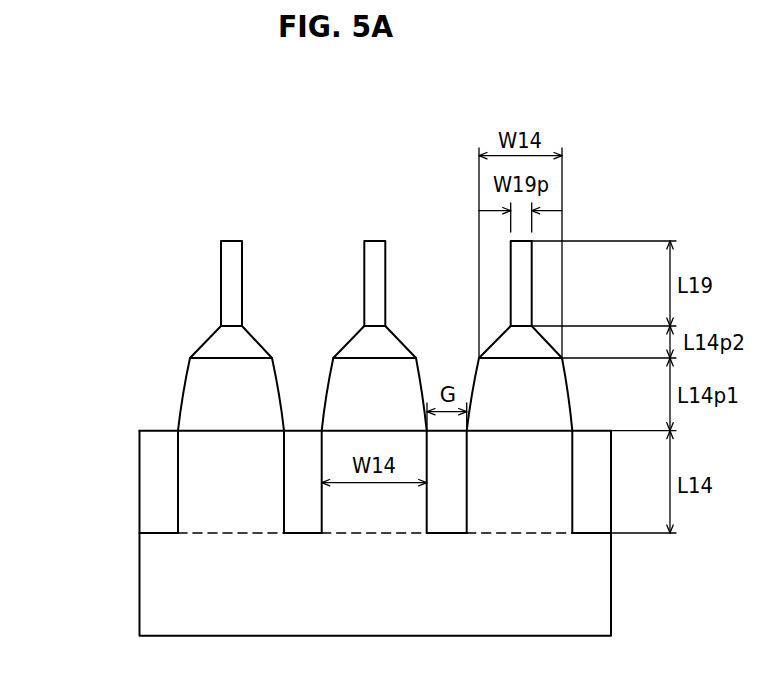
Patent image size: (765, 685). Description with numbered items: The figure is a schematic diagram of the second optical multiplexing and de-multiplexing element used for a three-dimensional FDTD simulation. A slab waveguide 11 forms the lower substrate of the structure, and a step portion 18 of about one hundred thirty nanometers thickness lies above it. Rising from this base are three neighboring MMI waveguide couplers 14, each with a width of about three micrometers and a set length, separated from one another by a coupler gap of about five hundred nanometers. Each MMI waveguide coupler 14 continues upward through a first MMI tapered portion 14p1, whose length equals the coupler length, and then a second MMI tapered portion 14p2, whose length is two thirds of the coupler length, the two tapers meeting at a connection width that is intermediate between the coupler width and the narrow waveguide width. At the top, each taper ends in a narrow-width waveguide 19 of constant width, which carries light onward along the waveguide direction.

The slab waveguide 11 is at (152, 588).
The step portion 18 is at (152, 502).
The MMI waveguide coupler 14 is at (192, 460).
The first MMI tapered portion 14p1 is at (197, 399).
The second MMI tapered portion 14p2 is at (218, 345).
The narrow-width waveguide 19 is at (238, 289).